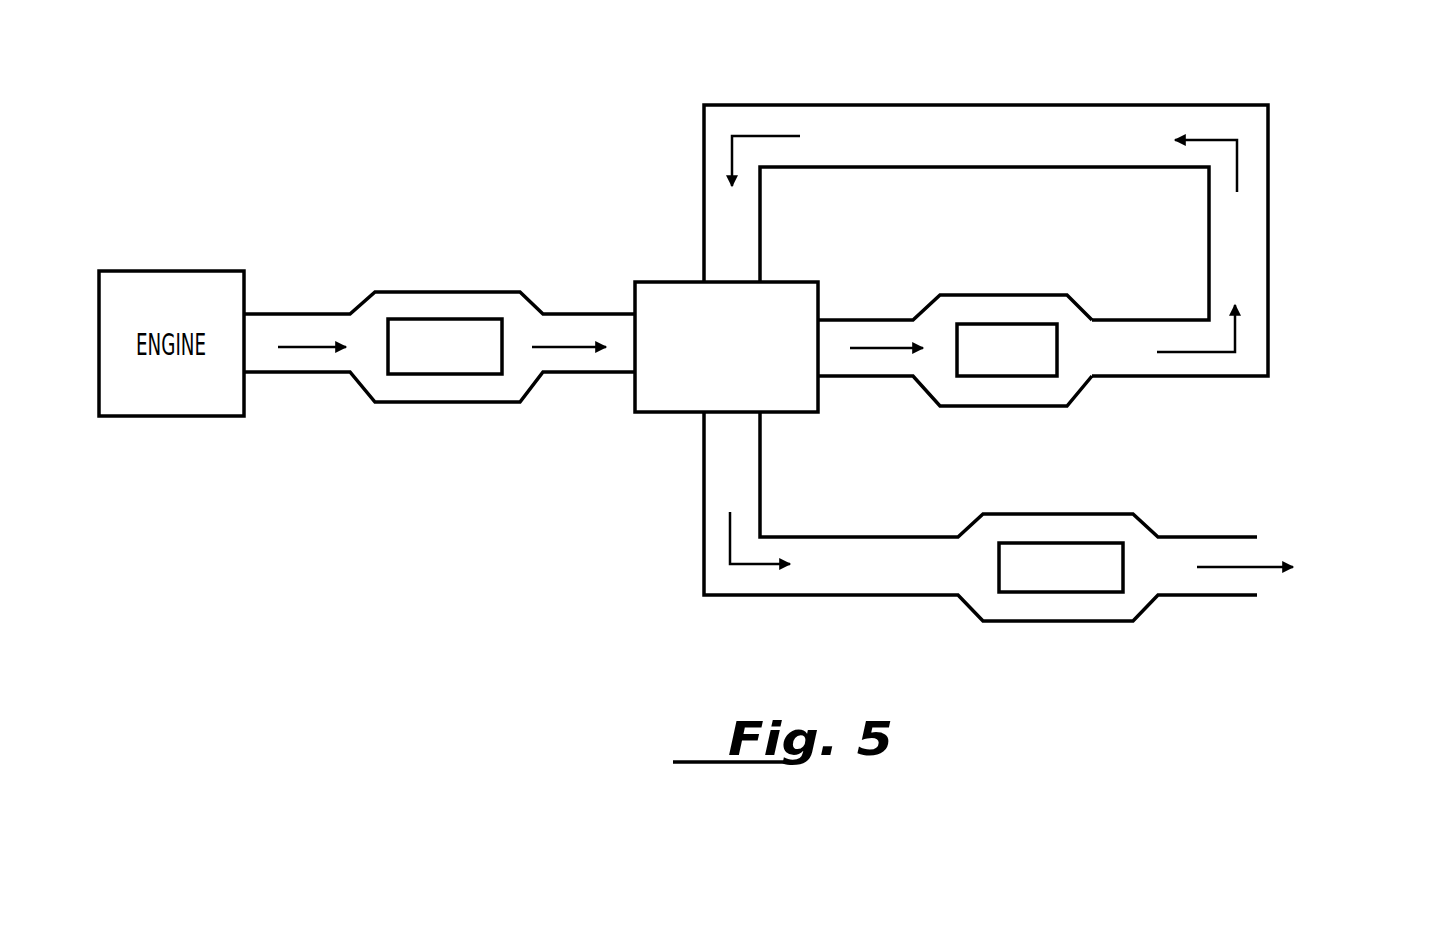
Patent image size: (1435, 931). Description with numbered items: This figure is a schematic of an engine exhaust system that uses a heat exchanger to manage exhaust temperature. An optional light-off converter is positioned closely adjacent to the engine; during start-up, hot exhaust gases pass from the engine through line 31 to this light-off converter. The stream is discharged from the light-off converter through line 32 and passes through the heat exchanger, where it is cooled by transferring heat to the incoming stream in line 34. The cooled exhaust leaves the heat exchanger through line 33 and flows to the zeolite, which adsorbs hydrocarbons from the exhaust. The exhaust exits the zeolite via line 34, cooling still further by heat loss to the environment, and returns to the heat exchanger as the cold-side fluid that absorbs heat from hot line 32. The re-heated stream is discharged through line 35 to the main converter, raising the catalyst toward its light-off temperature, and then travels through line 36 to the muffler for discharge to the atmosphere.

The line 31 is at (314, 327).
The line 32 is at (581, 328).
The line 33 is at (870, 330).
The line 34 is at (966, 128).
The line 35 is at (748, 477).
The line 36 is at (1213, 550).